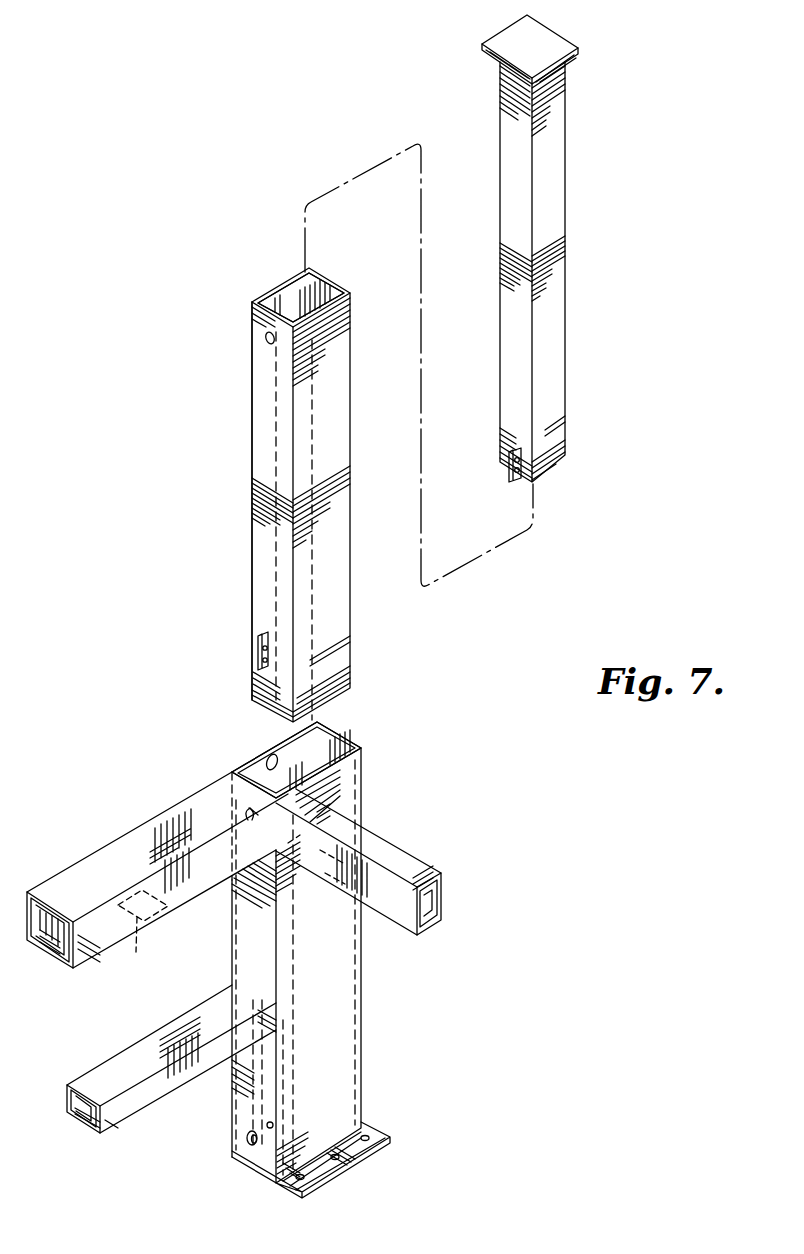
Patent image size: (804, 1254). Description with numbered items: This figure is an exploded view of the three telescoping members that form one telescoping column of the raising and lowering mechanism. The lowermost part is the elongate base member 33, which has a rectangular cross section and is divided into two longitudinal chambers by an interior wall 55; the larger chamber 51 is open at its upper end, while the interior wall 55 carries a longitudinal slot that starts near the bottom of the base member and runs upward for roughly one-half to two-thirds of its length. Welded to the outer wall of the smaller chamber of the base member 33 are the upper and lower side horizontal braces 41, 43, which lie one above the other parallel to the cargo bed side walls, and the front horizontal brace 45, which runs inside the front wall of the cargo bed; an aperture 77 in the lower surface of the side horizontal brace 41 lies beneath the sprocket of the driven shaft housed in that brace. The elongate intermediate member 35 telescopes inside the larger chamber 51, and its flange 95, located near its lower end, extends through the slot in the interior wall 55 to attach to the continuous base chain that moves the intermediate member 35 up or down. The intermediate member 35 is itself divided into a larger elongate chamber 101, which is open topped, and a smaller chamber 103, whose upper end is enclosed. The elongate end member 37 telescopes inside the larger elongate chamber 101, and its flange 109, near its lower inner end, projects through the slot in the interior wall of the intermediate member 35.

The base member 33 is at (352, 1030).
The intermediate member 35 is at (338, 448).
The end member 37 is at (557, 227).
The side horizontal brace 41 is at (128, 843).
The side horizontal brace 43 is at (198, 1008).
The front horizontal brace 45 is at (408, 852).
The larger chamber 51 is at (332, 750).
The interior wall 55 is at (277, 757).
The aperture 77 is at (138, 940).
The flange 95 is at (258, 652).
The larger elongate chamber 101 is at (327, 285).
The smaller chamber 103 is at (260, 422).
The flange 109 is at (509, 472).